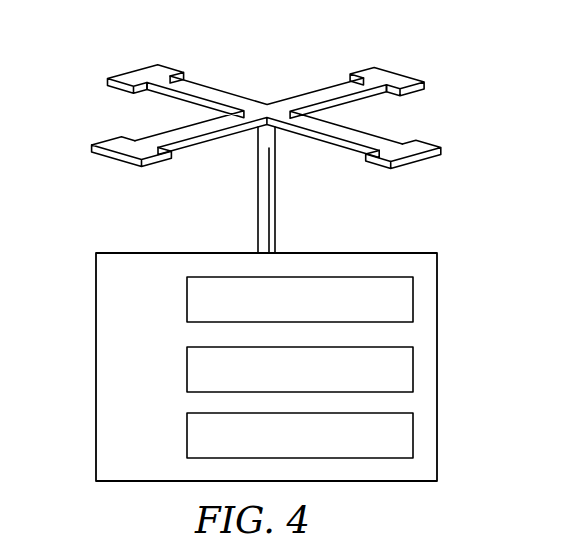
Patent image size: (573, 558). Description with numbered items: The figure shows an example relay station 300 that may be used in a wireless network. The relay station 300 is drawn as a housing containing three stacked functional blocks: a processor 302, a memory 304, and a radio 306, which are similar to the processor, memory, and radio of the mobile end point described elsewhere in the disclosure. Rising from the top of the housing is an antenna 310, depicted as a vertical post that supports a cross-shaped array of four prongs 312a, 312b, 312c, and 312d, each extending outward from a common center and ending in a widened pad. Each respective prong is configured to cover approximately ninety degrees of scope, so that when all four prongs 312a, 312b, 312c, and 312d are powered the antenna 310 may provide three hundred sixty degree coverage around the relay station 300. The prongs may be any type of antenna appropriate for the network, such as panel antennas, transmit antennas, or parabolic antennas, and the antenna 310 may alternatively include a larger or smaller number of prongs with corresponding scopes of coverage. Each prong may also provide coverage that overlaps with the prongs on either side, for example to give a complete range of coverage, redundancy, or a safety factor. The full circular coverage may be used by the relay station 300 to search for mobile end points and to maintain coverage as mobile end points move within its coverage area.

The relay station 300 is at (303, 367).
The processor 302 is at (187, 300).
The memory 304 is at (187, 367).
The radio 306 is at (187, 436).
The antenna 310 is at (258, 198).
The prong 312a is at (140, 72).
The prong 312b is at (394, 75).
The prong 312c is at (417, 142).
The prong 312d is at (118, 137).